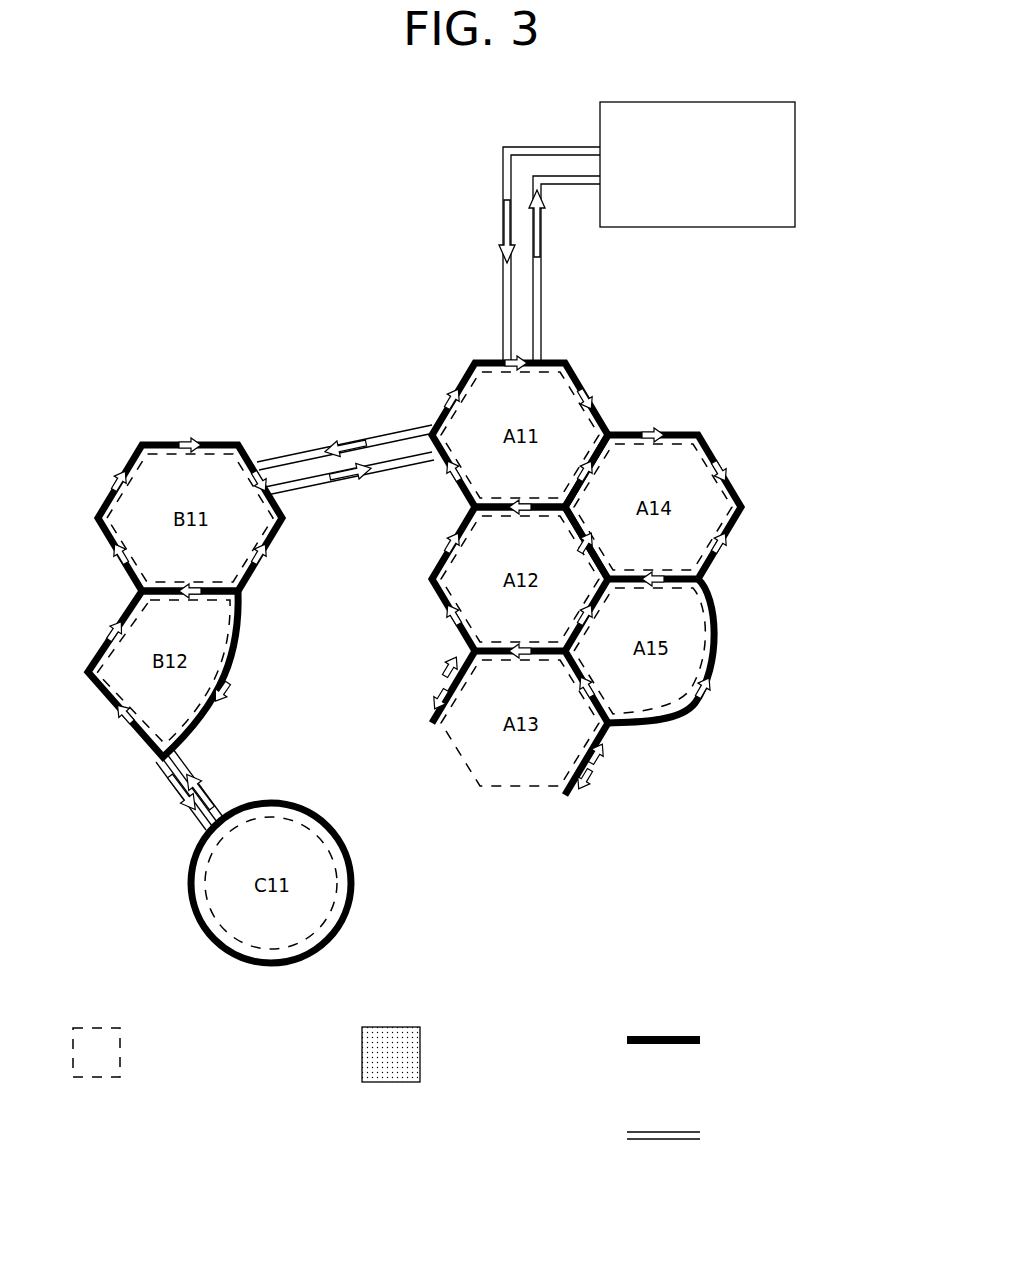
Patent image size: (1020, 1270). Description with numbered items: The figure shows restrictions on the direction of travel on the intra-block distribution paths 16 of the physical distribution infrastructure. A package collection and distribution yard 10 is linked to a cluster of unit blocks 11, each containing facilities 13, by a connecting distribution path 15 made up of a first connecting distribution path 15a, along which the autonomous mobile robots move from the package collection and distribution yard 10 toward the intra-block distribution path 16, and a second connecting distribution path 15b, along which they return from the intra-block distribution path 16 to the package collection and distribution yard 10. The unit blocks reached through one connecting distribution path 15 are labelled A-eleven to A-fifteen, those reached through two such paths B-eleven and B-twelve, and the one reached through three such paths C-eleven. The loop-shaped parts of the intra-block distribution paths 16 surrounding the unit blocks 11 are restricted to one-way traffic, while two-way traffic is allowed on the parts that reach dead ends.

The package collection and distribution yard 10 is at (796, 162).
The unit block 11 is at (402, 724).
The facility 13 is at (472, 1054).
The connecting distribution path 15 is at (515, 809).
The first connecting distribution path 15a is at (502, 300).
The second connecting distribution path 15b is at (542, 303).
The intra-block distribution path 16 is at (481, 730).